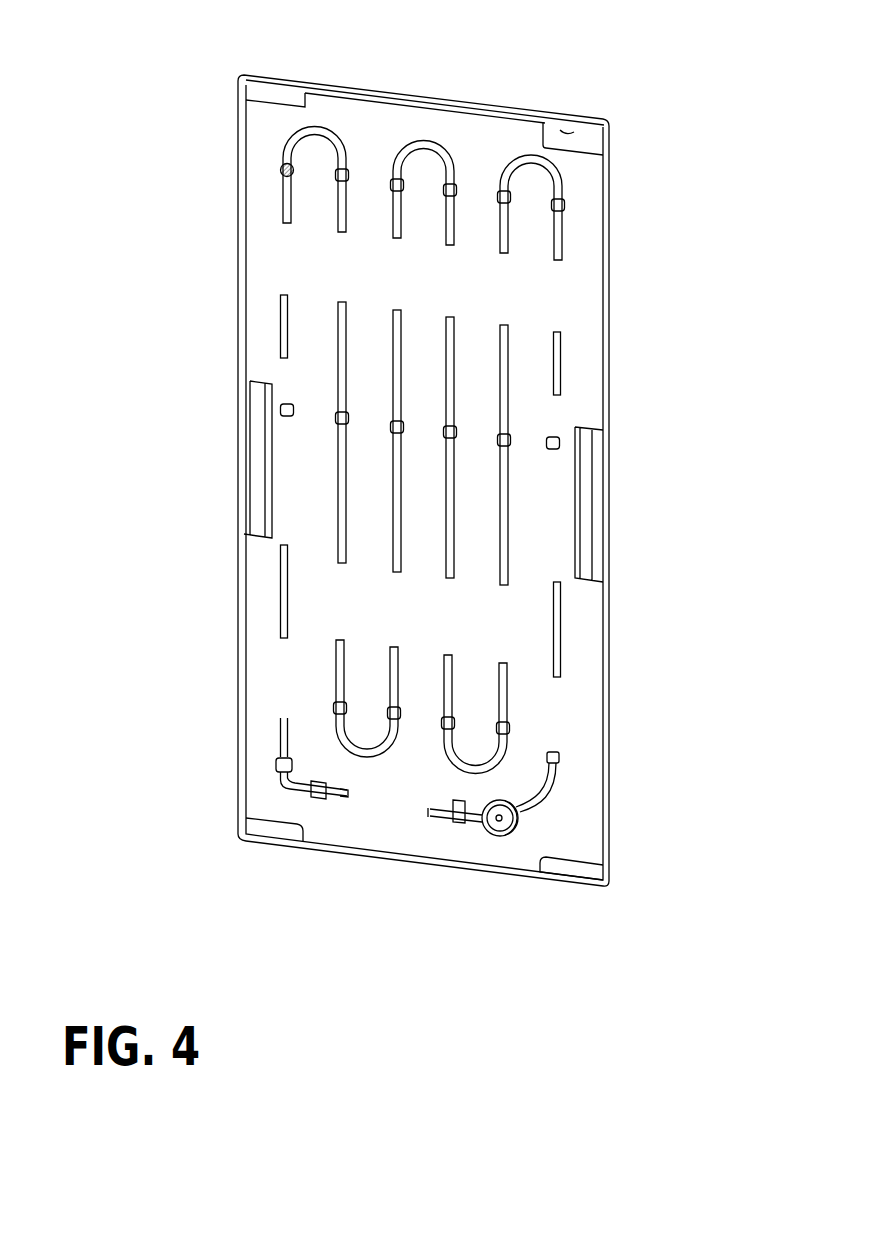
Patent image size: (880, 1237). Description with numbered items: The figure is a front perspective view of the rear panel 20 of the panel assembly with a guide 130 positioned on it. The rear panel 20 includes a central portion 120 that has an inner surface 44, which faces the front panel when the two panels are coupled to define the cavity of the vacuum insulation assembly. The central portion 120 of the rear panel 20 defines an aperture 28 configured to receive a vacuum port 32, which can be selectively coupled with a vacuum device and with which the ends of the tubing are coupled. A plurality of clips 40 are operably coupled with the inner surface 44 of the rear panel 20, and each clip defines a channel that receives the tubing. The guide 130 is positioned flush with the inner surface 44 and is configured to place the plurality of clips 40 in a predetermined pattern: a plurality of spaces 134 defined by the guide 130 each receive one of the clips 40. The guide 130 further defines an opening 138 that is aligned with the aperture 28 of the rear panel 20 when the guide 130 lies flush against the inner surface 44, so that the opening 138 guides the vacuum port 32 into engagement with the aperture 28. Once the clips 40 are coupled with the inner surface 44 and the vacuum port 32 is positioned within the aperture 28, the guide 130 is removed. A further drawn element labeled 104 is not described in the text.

The rear panel 20 is at (574, 867).
The aperture 28 is at (530, 822).
The vacuum port 32 is at (497, 826).
The clips 40 is at (283, 172).
The inner surface 44 is at (571, 128).
The housing wall 104 is at (608, 192).
The central portion 120 is at (593, 132).
The guide 130 is at (560, 700).
The spaces 134 is at (300, 160).
The opening 138 is at (530, 829).